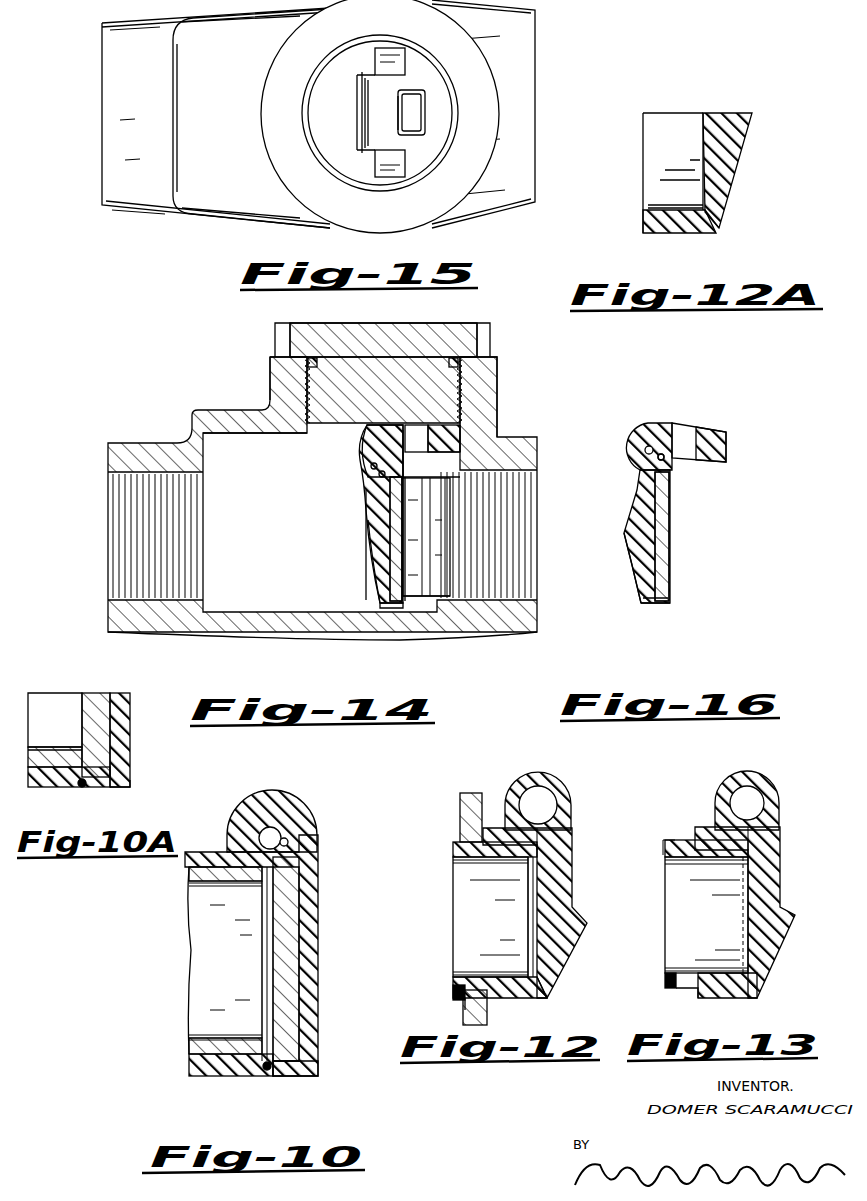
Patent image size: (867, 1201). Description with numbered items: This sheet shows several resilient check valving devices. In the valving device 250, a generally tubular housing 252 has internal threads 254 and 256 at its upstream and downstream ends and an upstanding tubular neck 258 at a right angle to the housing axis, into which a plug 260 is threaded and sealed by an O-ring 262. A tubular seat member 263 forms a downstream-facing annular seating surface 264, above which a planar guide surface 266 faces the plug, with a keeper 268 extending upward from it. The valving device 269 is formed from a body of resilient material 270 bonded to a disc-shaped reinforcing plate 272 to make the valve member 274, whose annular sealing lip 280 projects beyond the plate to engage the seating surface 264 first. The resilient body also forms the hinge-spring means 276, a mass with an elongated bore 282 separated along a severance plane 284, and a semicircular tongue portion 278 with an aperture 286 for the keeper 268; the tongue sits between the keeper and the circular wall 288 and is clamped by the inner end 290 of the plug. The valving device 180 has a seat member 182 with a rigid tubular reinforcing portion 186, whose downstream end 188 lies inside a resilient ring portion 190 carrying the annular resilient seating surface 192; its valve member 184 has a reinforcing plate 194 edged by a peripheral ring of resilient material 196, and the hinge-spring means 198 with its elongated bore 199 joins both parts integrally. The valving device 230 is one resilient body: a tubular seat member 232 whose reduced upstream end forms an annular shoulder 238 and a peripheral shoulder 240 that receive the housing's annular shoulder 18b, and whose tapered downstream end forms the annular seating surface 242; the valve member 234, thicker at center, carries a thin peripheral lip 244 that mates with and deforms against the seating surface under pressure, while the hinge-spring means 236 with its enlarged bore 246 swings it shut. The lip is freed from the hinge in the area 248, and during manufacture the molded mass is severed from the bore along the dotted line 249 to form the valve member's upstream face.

In FIG. 15, the valving device 250 is at (134, 221).
In FIG. 14, the valving device 250 is at (247, 377).
In FIG. 15, the tubular housing 252 is at (238, 206).
In FIG. 14, the tubular housing 252 is at (228, 636).
In FIG. 14, the internal threads 254 is at (538, 597).
In FIG. 14, the internal threads 256 is at (122, 590).
In FIG. 14, the tubular neck 258 is at (487, 372).
In FIG. 14, the plug 260 is at (462, 336).
In FIG. 14, the O-ring 262 is at (460, 362).
In FIG. 14, the tubular seat member 263 is at (428, 490).
In FIG. 14, the annular seating surface 264 is at (412, 472).
In FIG. 14, the guide surface 266 is at (462, 447).
In FIG. 15, the keeper 268 is at (421, 124).
In FIG. 14, the keeper 268 is at (416, 432).
In FIG. 15, the valving device 269 is at (356, 97).
In FIG. 14, the valving device 269 is at (360, 546).
In FIG. 16, the valving device 269 is at (624, 517).
In FIG. 14, the body of resilient material 270 is at (372, 511).
In FIG. 14, the reinforcing plate 272 is at (398, 523).
In FIG. 15, the valve member 274 is at (372, 58).
In FIG. 14, the valve member 274 is at (370, 581).
In FIG. 16, the valve member 274 is at (630, 562).
In FIG. 15, the hinge-spring means 276 is at (364, 118).
In FIG. 14, the hinge-spring means 276 is at (362, 450).
In FIG. 16, the hinge-spring means 276 is at (623, 432).
In FIG. 15, the tongue portion 278 is at (438, 100).
In FIG. 14, the tongue portion 278 is at (455, 440).
In FIG. 16, the tongue portion 278 is at (720, 432).
In FIG. 14, the annular sealing lip 280 is at (398, 612).
In FIG. 16, the annular sealing lip 280 is at (656, 605).
In FIG. 14, the elongated bore 282 is at (372, 467).
In FIG. 14, the severance plane 284 is at (378, 484).
In FIG. 16, the severance plane 284 is at (665, 456).
In FIG. 15, the aperture 286 is at (399, 112).
In FIG. 14, the aperture 286 is at (401, 433).
In FIG. 14, the circular wall 288 is at (462, 432).
In FIG. 14, the inner end 290 is at (340, 432).
In FIG. 10, the valving device 180 is at (315, 806).
In FIG. 10, the seat member 182 is at (204, 1080).
In FIG. 10, the valve member 184 is at (326, 970).
In FIG. 10A, the tubular reinforcing portion 186 is at (60, 746).
In FIG. 10, the tubular reinforcing portion 186 is at (196, 1046).
In FIG. 10A, the downstream end 188 is at (82, 730).
In FIG. 10, the downstream end 188 is at (263, 902).
In FIG. 10A, the resilient ring portion 190 is at (62, 788).
In FIG. 10, the resilient ring portion 190 is at (237, 1078).
In FIG. 10A, the annular resilient seating surface 192 is at (84, 788).
In FIG. 10, the annular resilient seating surface 192 is at (265, 1078).
In FIG. 10A, the reinforcing plate 194 is at (120, 716).
In FIG. 10, the reinforcing plate 194 is at (295, 1040).
In FIG. 10A, the peripheral ring of resilient material 196 is at (112, 783).
In FIG. 10, the peripheral ring of resilient material 196 is at (291, 1076).
In FIG. 10, the hinge-spring means 198 is at (236, 791).
In FIG. 10, the elongated bore 199 is at (289, 842).
In FIG. 12, the annular shoulder 18b is at (470, 813).
In FIG. 12, the valving device 230 is at (575, 818).
In FIG. 12A, the seat member 232 is at (657, 200).
In FIG. 12, the seat member 232 is at (470, 862).
In FIG. 13, the seat member 232 is at (690, 850).
In FIG. 12A, the valve member 234 is at (730, 153).
In FIG. 12, the valve member 234 is at (575, 898).
In FIG. 13, the valve member 234 is at (788, 906).
In FIG. 12, the hinge-spring means 236 is at (538, 780).
In FIG. 13, the hinge-spring means 236 is at (765, 782).
In FIG. 12, the annular shoulder 238 is at (468, 1004).
In FIG. 13, the annular shoulder 238 is at (694, 999).
In FIG. 12, the peripheral shoulder 240 is at (452, 993).
In FIG. 13, the peripheral shoulder 240 is at (666, 988).
In FIG. 12A, the annular seating surface 242 is at (698, 230).
In FIG. 12, the annular seating surface 242 is at (535, 1000).
In FIG. 13, the annular seating surface 242 is at (735, 975).
In FIG. 12A, the peripheral lip 244 is at (722, 222).
In FIG. 12, the peripheral lip 244 is at (548, 994).
In FIG. 12, the bore 246 is at (560, 800).
In FIG. 13, the bore 246 is at (765, 797).
In FIG. 12, the area 248 is at (566, 832).
In FIG. 13, the area 248 is at (785, 830).
In FIG. 13, the dotted line 249 is at (785, 848).